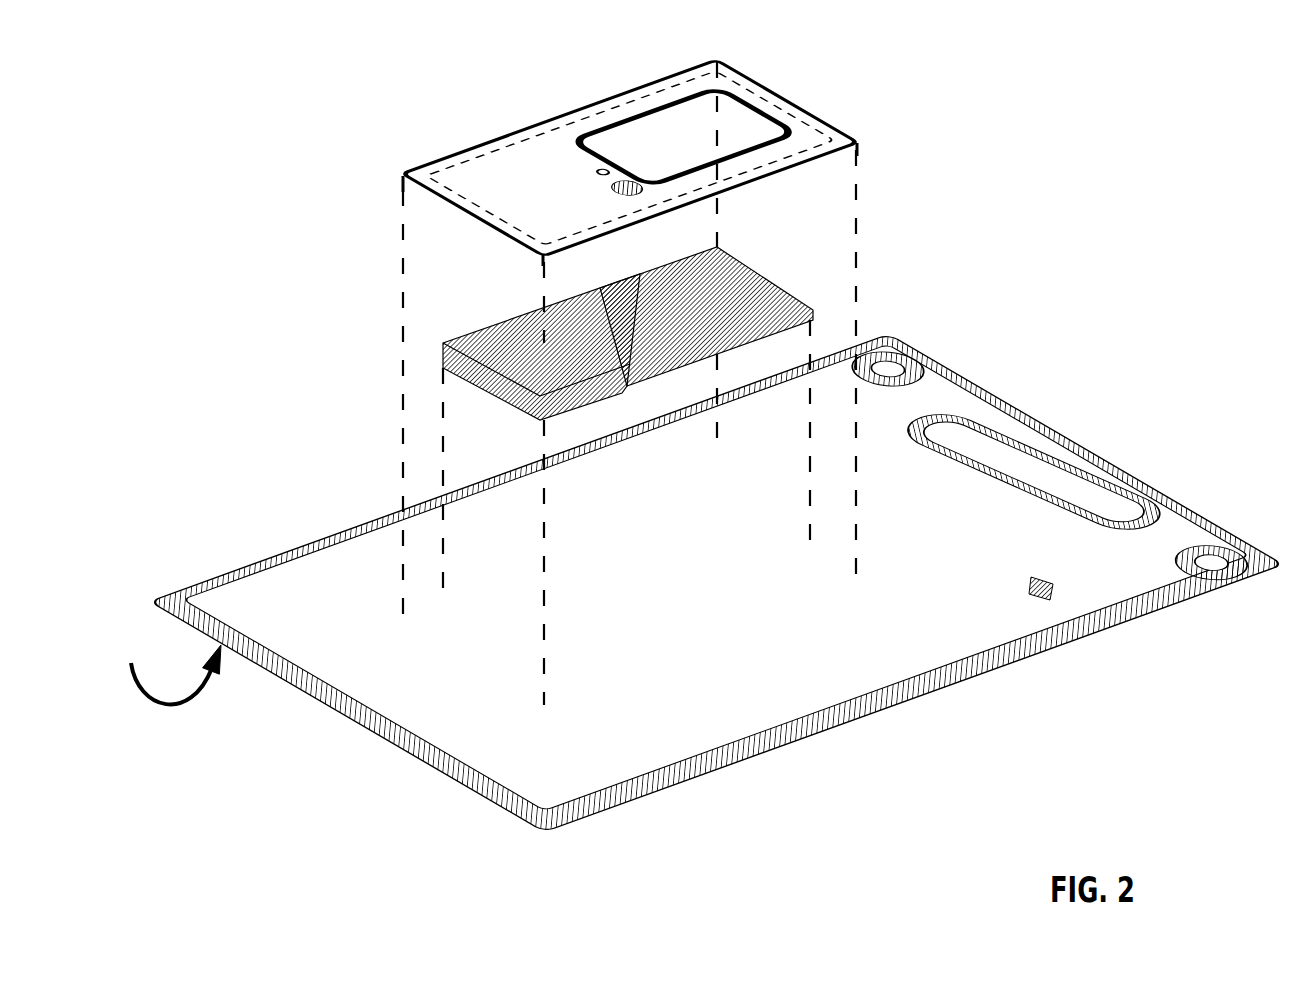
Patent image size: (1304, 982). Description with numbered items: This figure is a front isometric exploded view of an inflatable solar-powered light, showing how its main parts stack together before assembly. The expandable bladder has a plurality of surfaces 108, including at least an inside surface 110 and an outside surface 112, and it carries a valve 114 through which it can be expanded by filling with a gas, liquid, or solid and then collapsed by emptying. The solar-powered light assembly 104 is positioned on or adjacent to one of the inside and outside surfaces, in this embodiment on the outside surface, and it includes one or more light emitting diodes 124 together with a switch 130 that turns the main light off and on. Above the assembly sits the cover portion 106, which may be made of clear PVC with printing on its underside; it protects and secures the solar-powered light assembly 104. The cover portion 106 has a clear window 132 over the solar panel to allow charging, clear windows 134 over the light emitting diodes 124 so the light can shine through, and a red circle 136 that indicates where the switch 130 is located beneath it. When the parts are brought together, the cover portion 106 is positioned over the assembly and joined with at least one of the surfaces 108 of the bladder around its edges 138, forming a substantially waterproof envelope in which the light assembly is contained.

The solar-powered light assembly 104 is at (713, 219).
The cover portion 106 is at (655, 142).
The surfaces 108 is at (716, 583).
The inside surface 110 is at (157, 664).
The outside surface 112 is at (711, 689).
The valve 114 is at (1045, 595).
The light emitting diode 124 is at (605, 342).
The switch 130 is at (625, 363).
The clear window 132 is at (698, 161).
The clear windows 134 is at (601, 168).
The red circle 136 is at (631, 184).
The edges 138 is at (780, 98).